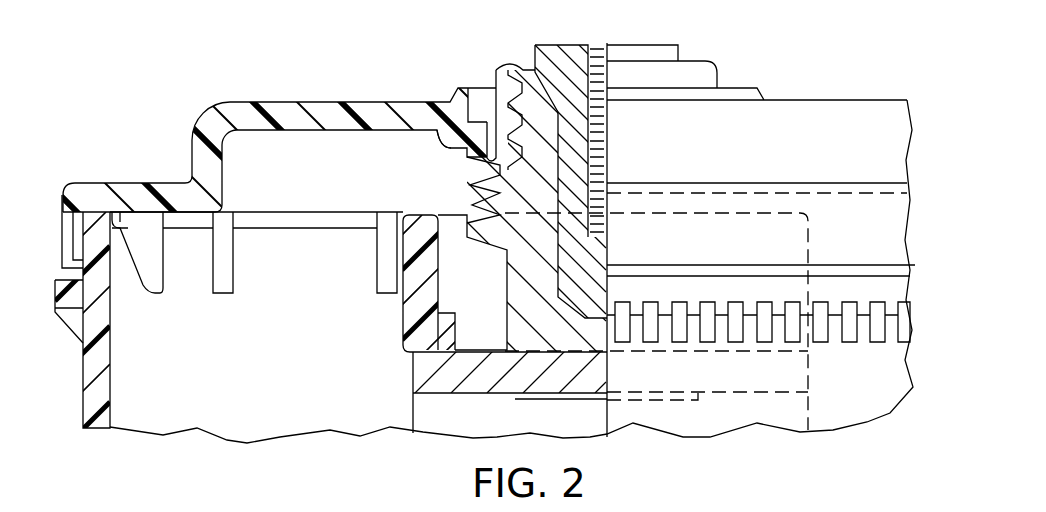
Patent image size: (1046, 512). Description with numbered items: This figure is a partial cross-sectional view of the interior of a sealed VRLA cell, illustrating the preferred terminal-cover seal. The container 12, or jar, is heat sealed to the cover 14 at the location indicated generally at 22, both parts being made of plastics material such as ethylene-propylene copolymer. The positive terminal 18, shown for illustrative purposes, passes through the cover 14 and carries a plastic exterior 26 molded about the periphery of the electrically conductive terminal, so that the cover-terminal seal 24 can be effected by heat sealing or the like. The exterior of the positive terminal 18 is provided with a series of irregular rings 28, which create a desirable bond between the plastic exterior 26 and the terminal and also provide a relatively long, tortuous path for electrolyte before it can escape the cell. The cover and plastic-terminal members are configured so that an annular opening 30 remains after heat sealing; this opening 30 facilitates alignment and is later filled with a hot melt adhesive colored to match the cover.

The container 12 is at (98, 428).
The cover 14 is at (192, 140).
The positive terminal 18 is at (520, 60).
The heat seal 22 is at (78, 176).
The cover-terminal seal 24 is at (446, 81).
The plastic exterior 26 is at (488, 91).
The irregular rings 28 is at (467, 175).
The opening 30 is at (483, 85).